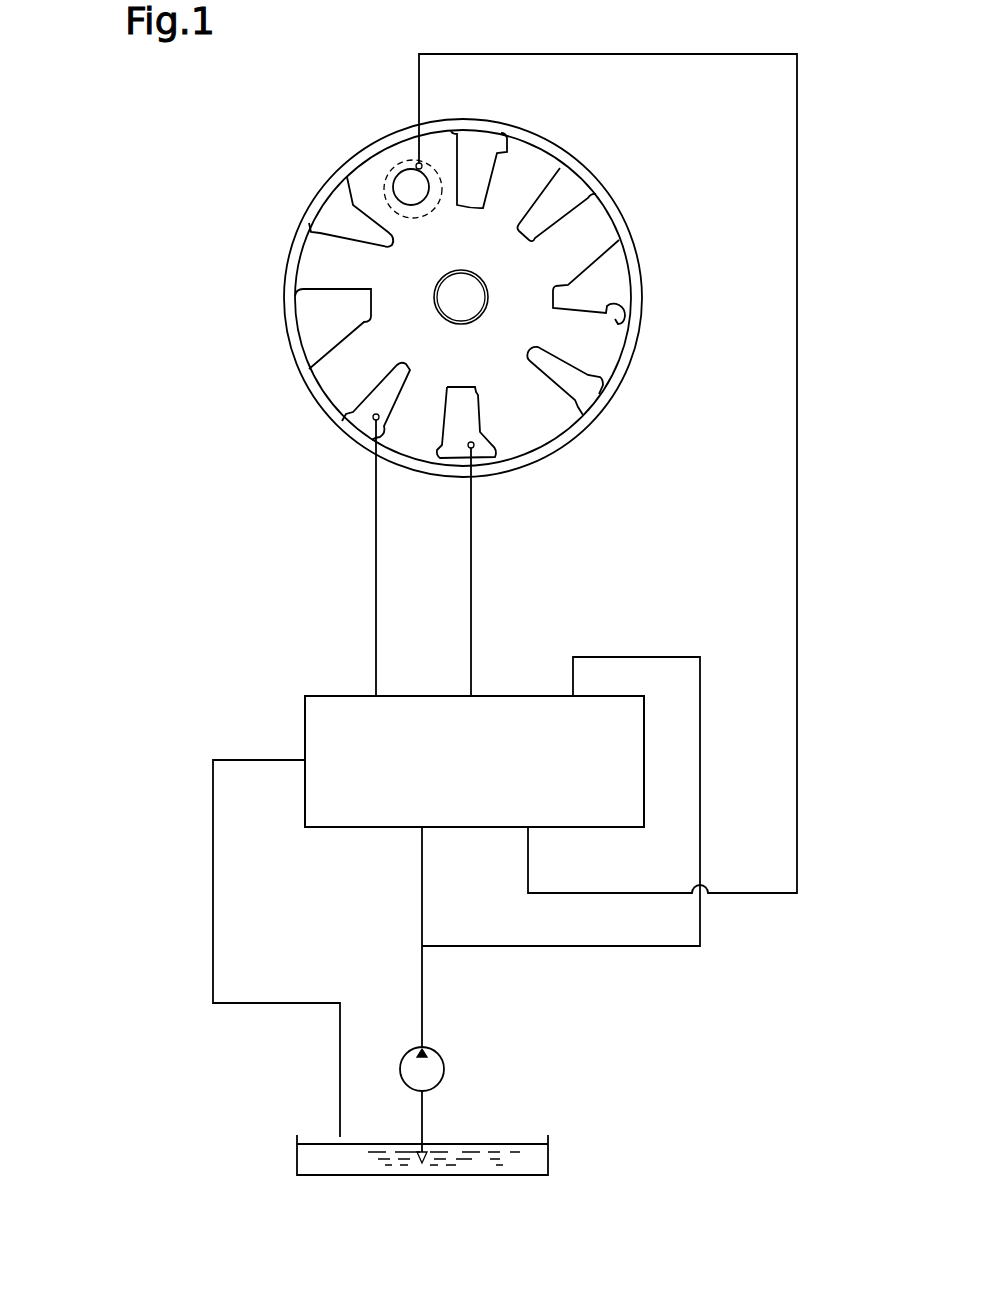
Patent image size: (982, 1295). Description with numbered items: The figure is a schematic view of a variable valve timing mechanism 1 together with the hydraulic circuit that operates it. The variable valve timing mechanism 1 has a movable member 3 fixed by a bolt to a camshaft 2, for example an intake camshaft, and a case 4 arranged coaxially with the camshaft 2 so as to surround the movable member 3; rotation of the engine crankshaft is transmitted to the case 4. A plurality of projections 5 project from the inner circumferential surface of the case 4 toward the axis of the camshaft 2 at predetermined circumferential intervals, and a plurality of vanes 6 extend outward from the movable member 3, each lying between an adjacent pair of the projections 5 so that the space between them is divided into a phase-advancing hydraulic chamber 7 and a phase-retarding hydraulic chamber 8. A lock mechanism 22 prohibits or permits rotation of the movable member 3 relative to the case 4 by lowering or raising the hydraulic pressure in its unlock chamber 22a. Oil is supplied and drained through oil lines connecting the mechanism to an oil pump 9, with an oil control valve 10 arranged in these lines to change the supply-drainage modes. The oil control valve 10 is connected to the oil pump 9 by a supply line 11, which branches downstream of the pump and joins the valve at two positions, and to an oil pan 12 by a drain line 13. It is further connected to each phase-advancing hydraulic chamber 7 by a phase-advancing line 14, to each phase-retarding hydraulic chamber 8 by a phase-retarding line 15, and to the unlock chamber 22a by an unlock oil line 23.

The variable valve timing mechanism 1 is at (331, 147).
The camshaft 2 is at (460, 272).
The movable member 3 is at (424, 378).
The case 4 is at (452, 473).
The projections 5 is at (368, 283).
The vanes 6 is at (398, 157).
The phase-advancing hydraulic chamber 7 is at (326, 210).
The phase-retarding hydraulic chamber 8 is at (493, 144).
The oil pump 9 is at (402, 1076).
The oil control valve 10 is at (316, 696).
The supply line 11 is at (422, 1017).
The oil pan 12 is at (297, 1162).
The drain line 13 is at (340, 1046).
The phase-advancing line 14 is at (376, 590).
The phase-retarding line 15 is at (474, 582).
The lock mechanism 22 is at (408, 207).
The unlock chamber 22a is at (428, 205).
The unlock oil line 23 is at (798, 490).